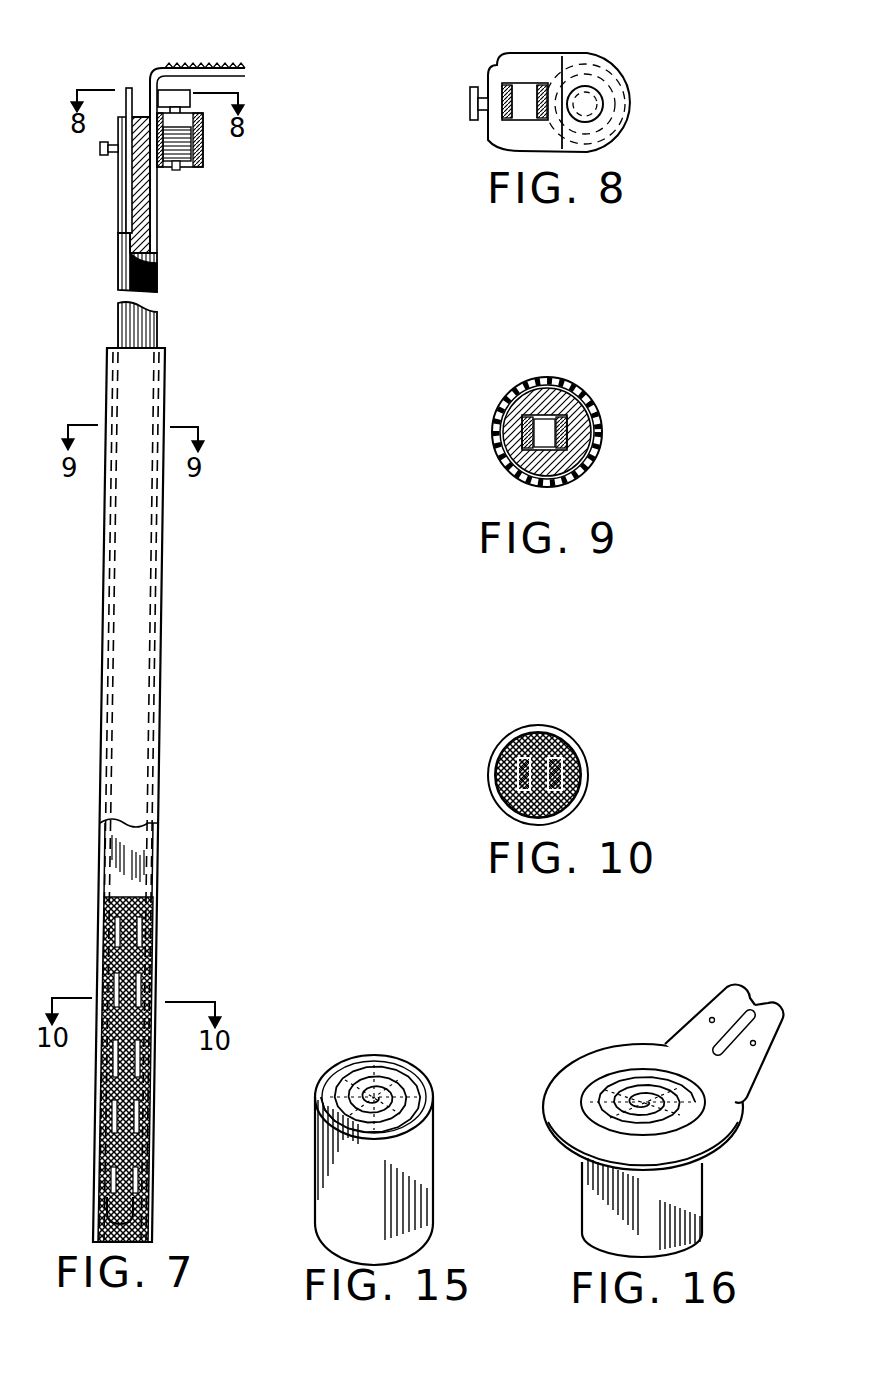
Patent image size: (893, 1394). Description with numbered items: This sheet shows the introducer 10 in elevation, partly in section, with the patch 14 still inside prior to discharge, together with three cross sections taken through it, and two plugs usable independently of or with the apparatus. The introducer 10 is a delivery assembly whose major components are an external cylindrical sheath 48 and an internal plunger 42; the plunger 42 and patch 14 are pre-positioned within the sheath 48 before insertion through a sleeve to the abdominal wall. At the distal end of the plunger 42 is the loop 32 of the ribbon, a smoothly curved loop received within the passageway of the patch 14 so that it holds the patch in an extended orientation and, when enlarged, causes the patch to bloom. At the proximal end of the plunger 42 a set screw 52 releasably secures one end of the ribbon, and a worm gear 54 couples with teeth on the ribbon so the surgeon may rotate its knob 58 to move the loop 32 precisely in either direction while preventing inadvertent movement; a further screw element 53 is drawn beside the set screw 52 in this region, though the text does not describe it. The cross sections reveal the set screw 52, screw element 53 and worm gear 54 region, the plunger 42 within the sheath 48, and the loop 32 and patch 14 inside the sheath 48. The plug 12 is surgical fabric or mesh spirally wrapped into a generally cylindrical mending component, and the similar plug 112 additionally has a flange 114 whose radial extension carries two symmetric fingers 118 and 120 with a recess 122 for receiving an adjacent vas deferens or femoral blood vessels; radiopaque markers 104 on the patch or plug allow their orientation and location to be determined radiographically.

In FIG. 7, the introducer 10 is at (97, 526).
In FIG. 15, the plug 12 is at (314, 1168).
In FIG. 10, the patch 14 is at (557, 730).
In FIG. 7, the loop 32 is at (102, 963).
In FIG. 10, the loop 32 is at (585, 767).
In FIG. 7, the plunger 42 is at (160, 275).
In FIG. 9, the plunger 42 is at (590, 474).
In FIG. 7, the sheath 48 is at (165, 397).
In FIG. 9, the sheath 48 is at (520, 481).
In FIG. 10, the sheath 48 is at (590, 797).
In FIG. 7, the set screw 52 is at (128, 88).
In FIG. 8, the set screw 52 is at (497, 65).
In FIG. 9, the set screw 52 is at (498, 405).
In FIG. 7, the set screw 53 is at (103, 157).
In FIG. 8, the set screw 53 is at (470, 98).
In FIG. 7, the worm gear 54 is at (207, 152).
In FIG. 8, the worm gear 54 is at (640, 85).
In FIG. 7, the knob 58 is at (155, 94).
In FIG. 8, the knob 58 is at (598, 93).
In FIG. 15, the radiopaque markers 104 is at (397, 1060).
In FIG. 16, the radiopaque markers 104 is at (710, 1016).
In FIG. 16, the plug 112 is at (587, 1227).
In FIG. 16, the flange 114 is at (717, 1137).
In FIG. 16, the finger 118 is at (760, 1073).
In FIG. 16, the finger 120 is at (673, 1040).
In FIG. 16, the recess 122 is at (754, 1010).